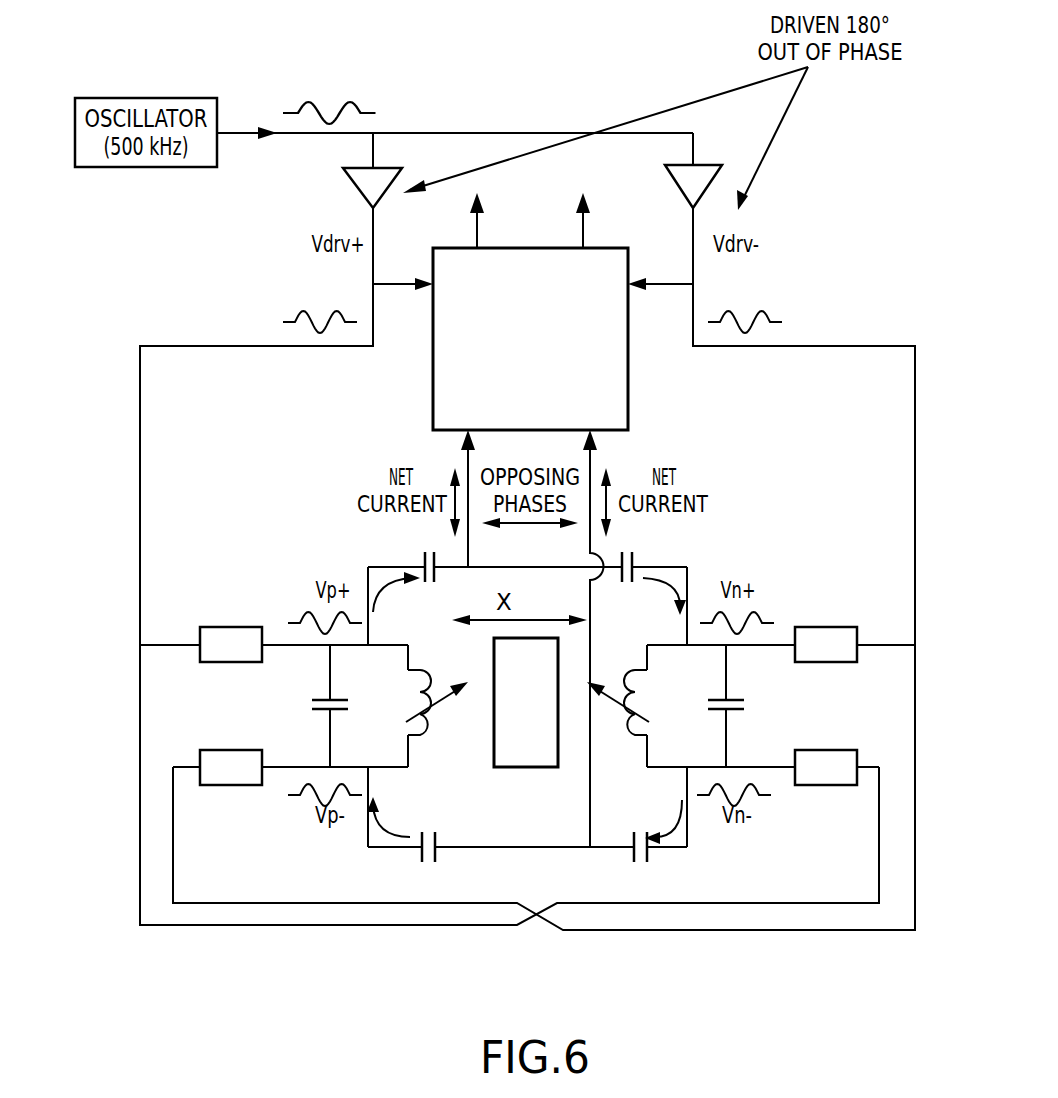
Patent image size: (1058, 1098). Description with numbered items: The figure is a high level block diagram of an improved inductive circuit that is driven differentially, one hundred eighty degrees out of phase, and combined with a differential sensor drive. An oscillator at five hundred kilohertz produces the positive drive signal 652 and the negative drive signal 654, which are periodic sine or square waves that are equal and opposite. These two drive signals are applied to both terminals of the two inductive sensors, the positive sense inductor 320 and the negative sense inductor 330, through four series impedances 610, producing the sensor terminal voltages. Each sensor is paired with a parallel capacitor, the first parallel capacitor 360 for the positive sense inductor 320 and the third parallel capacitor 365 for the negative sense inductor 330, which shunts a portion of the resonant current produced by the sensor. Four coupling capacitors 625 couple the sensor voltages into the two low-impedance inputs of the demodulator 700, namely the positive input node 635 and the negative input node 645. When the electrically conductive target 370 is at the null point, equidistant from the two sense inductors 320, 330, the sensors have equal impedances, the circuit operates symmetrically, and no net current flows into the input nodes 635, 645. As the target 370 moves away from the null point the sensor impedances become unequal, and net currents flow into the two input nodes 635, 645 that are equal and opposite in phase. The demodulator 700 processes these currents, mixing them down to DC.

The Vdrv+ drive signal 652 is at (352, 186).
The Vdrv− drive signal 654 is at (706, 166).
The demodulator 700 is at (629, 365).
The RF+ input 635 is at (455, 404).
The RF− input 645 is at (606, 410).
The capacitor Cp5 625 is at (420, 560).
The series impedance Zs 610 is at (210, 627).
The capacitor Cp1 360 is at (334, 712).
The capacitor Cp3 365 is at (796, 699).
The inductive sensor Lsns+ 320 is at (420, 738).
The inductive sensor Lsns− 330 is at (635, 737).
The target 370 is at (492, 686).